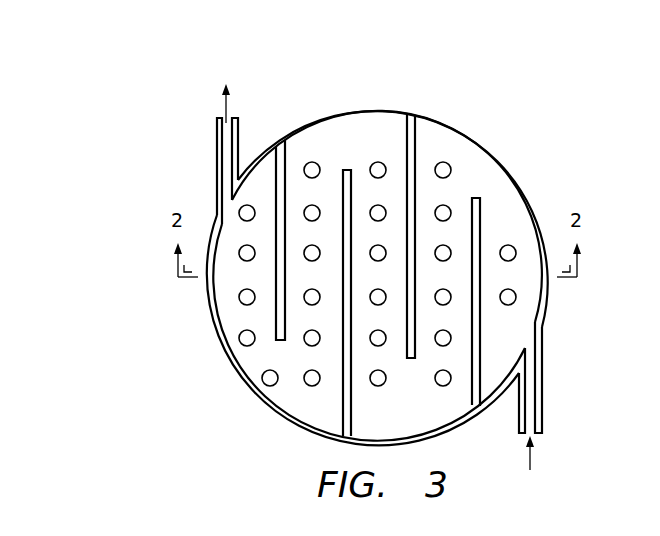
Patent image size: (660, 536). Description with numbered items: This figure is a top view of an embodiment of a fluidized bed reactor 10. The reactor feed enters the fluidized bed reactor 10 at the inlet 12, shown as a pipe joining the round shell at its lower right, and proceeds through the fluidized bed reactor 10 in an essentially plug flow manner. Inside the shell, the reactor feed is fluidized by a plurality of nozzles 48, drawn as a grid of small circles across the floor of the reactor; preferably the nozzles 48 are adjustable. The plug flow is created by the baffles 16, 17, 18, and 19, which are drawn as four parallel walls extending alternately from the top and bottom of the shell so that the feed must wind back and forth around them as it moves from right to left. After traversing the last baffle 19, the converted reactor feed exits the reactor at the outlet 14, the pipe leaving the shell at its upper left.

The fluidized bed reactor 10 is at (523, 137).
The inlet 12 is at (542, 394).
The outlet 14 is at (216, 140).
The baffle 16 is at (472, 262).
The baffle 17 is at (407, 222).
The baffle 18 is at (343, 265).
The baffle 19 is at (276, 265).
The nozzles 48 is at (262, 386).